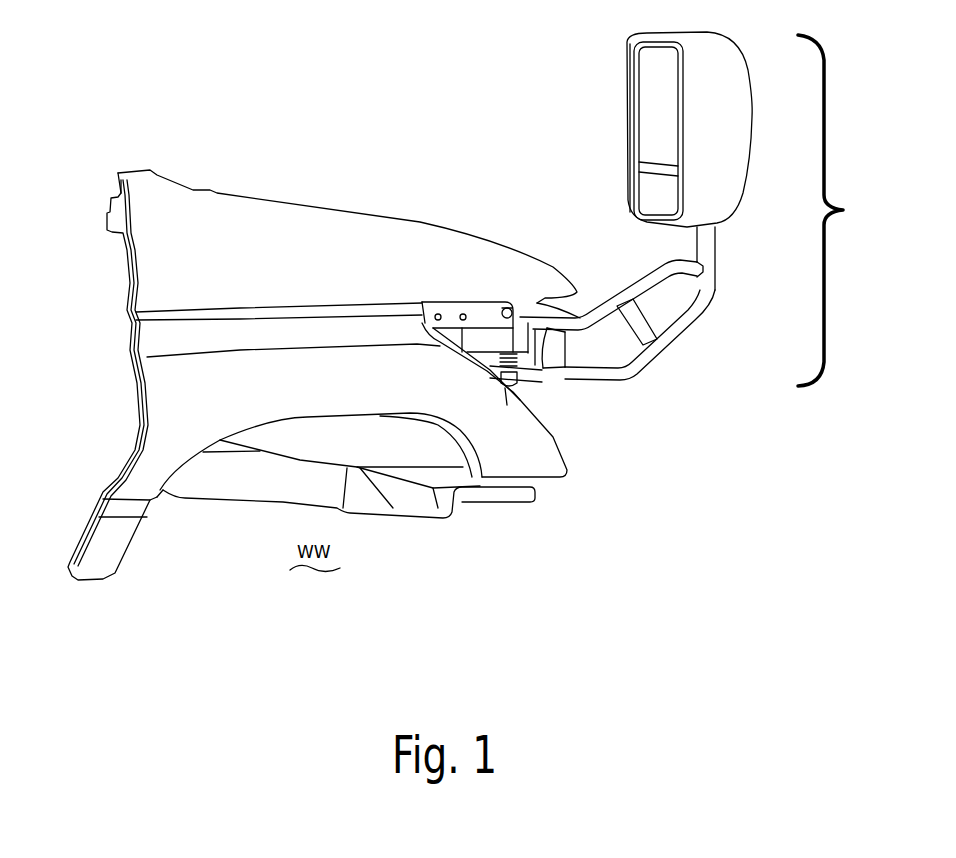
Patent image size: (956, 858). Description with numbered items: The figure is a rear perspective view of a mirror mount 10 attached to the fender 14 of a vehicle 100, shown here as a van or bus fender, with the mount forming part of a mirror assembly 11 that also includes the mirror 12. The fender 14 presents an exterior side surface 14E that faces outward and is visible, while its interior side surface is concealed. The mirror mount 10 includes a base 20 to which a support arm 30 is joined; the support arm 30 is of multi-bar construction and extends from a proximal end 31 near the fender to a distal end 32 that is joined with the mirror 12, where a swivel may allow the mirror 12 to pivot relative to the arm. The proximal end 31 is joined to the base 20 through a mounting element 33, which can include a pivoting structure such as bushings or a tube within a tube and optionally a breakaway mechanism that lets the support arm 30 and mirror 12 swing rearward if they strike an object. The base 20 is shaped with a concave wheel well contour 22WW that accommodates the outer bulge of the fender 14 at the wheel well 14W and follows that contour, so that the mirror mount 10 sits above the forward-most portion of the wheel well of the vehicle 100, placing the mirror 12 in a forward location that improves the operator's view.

The vehicle 100 is at (88, 268).
The mirror mount 10 is at (688, 407).
The mirror assembly 11 is at (837, 210).
The mirror 12 is at (748, 163).
The fender 14 is at (195, 272).
The exterior side surface 14E is at (200, 370).
The wheel well 14W is at (497, 413).
The base 20 is at (490, 386).
The wheel well contour 22WW is at (450, 352).
The support arm 30 is at (647, 353).
The proximal end 31 is at (577, 307).
The distal end 32 is at (710, 241).
The mounting element 33 is at (490, 342).